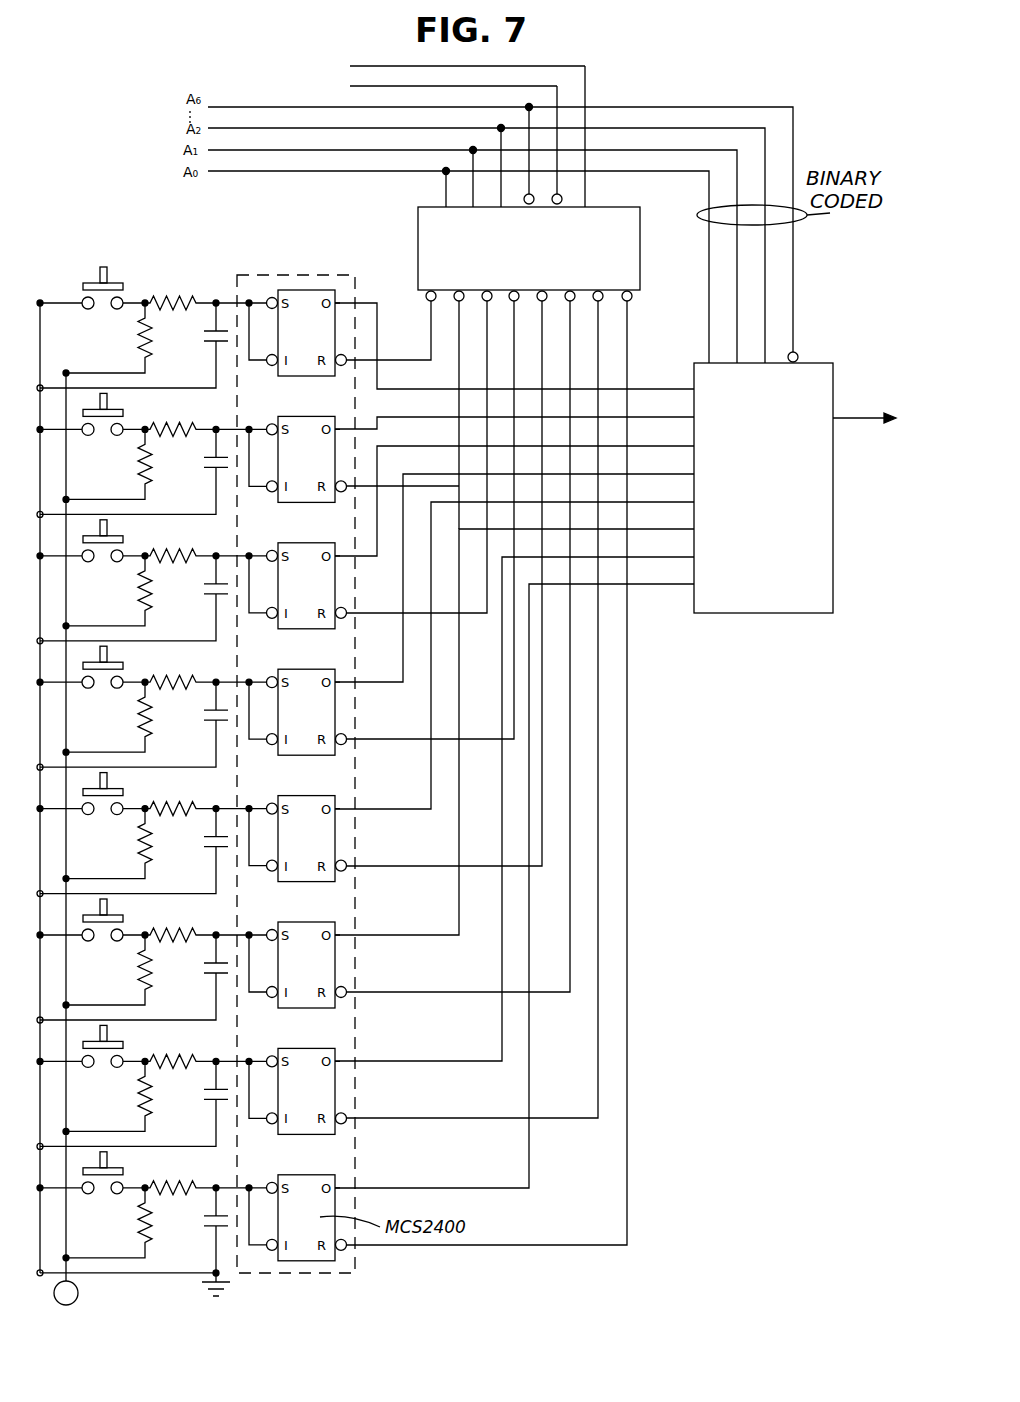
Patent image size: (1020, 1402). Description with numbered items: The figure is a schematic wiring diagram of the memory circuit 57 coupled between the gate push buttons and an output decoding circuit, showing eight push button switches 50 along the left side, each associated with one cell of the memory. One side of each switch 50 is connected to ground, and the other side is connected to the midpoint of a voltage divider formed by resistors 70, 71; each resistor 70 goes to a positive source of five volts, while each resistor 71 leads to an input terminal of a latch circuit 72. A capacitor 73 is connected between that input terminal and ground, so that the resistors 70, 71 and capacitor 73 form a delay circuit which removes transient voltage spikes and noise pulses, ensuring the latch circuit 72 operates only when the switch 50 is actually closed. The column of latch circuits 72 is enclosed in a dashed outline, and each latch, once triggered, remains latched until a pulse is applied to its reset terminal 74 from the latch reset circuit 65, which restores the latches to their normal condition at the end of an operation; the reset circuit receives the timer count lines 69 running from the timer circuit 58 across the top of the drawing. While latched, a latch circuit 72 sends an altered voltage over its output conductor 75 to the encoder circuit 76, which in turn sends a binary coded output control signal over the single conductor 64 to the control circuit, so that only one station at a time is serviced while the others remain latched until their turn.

The push button switch 50 is at (92, 279).
The memory circuit 57 is at (630, 56).
The timer circuit 58 is at (66, 840).
The output conductor 64 is at (849, 423).
The reset circuit 65 is at (612, 216).
The timer count input lines 69 is at (531, 86).
The resistor 70 is at (107, 339).
The resistor 71 is at (198, 277).
The latch circuit 72 is at (318, 279).
The capacitor 73 is at (132, 347).
The reset terminal 74 is at (346, 367).
The output conductor 75 is at (377, 321).
The encoder circuit 76 is at (700, 380).